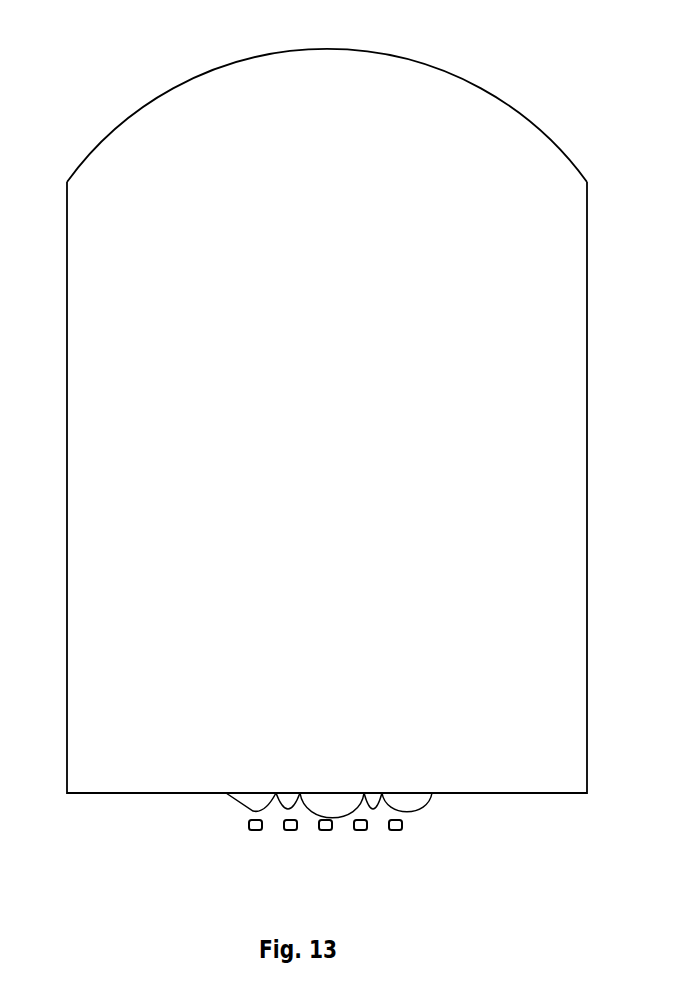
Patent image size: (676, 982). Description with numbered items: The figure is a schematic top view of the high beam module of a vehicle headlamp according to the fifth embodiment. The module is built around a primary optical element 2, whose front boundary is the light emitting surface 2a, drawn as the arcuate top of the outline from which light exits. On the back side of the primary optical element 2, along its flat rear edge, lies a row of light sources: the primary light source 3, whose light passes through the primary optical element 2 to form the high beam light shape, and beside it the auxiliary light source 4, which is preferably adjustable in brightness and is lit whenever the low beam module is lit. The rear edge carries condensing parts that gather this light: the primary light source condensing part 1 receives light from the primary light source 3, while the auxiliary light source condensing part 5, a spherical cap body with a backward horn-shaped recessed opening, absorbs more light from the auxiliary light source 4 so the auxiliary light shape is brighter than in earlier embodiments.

The primary light source condensing part 1 is at (248, 807).
The primary optical element 2 is at (82, 364).
The light emitting surface 2a is at (437, 68).
The primary light source 3 is at (258, 832).
The auxiliary light source 4 is at (326, 834).
The auxiliary light source condensing part 5 is at (329, 803).